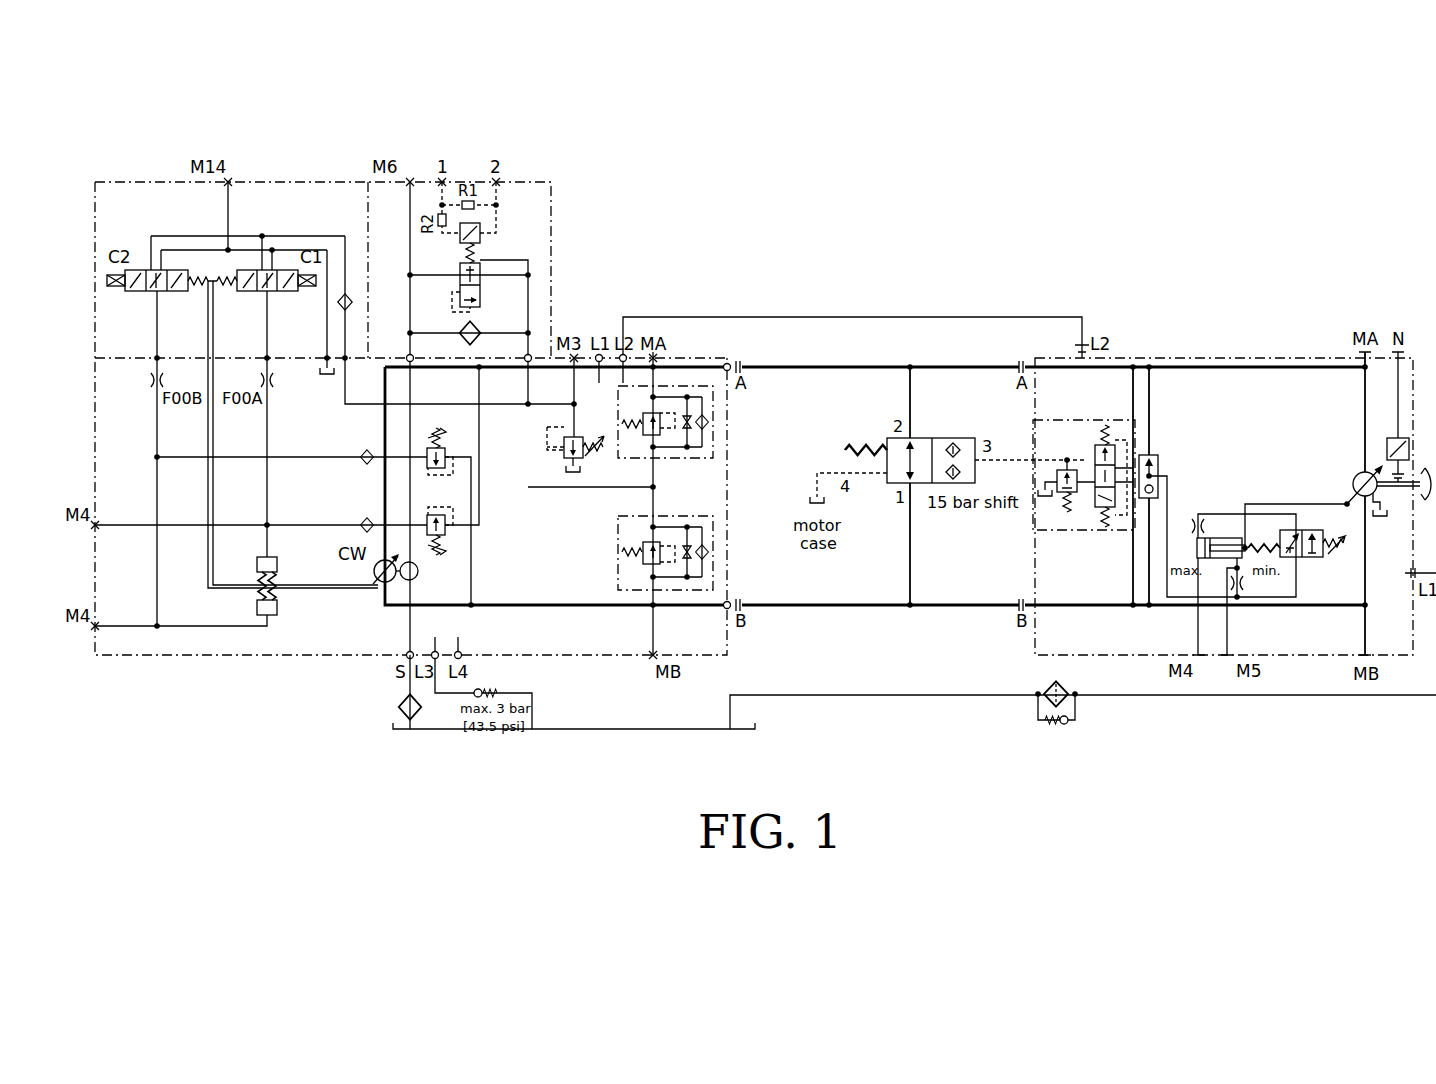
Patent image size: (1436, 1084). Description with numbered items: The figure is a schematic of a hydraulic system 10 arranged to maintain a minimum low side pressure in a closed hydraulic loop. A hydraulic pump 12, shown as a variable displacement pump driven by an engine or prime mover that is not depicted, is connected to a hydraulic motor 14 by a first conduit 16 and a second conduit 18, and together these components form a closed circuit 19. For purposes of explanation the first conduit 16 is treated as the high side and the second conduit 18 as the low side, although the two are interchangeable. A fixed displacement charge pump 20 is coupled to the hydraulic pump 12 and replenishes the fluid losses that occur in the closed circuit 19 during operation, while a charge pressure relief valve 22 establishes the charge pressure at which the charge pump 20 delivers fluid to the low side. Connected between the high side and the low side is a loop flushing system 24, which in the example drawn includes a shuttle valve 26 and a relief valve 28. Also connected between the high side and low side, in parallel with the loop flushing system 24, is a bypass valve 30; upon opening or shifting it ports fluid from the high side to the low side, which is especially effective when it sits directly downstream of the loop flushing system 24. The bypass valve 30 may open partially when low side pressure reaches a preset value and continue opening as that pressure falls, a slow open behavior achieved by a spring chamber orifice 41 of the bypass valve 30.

The hydraulic system 10 is at (897, 217).
The hydraulic pump 12 is at (380, 590).
The hydraulic motor 14 is at (1356, 475).
The first conduit 16 is at (867, 366).
The second conduit 18 is at (850, 607).
The closed circuit 19 is at (783, 663).
The charge pump 20 is at (418, 578).
The charge pressure relief valve 22 is at (580, 437).
The loop flushing system 24 is at (1066, 430).
The shuttle valve 26 is at (1106, 468).
The relief valve 28 is at (1074, 496).
The bypass valve 30 is at (925, 438).
The spring chamber orifice 41 is at (857, 440).